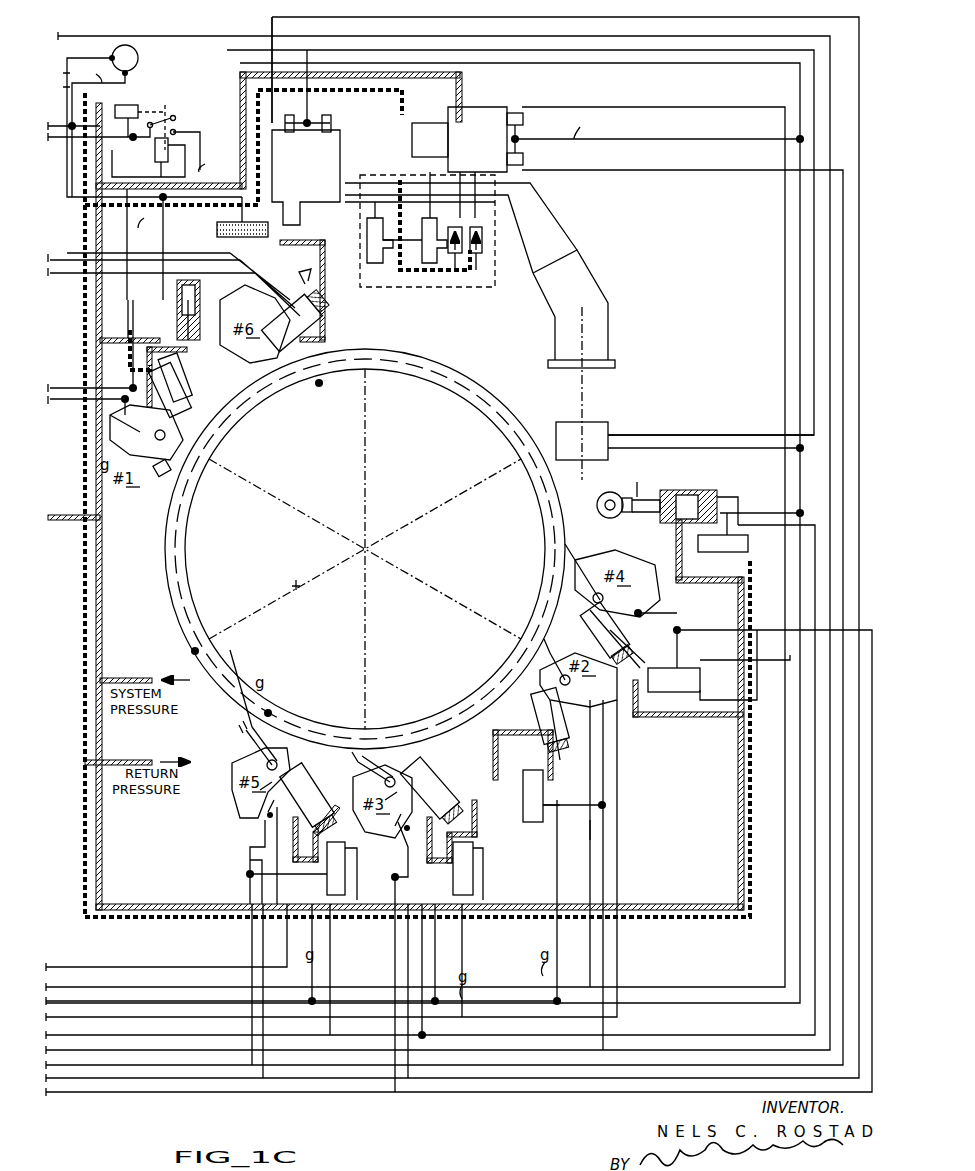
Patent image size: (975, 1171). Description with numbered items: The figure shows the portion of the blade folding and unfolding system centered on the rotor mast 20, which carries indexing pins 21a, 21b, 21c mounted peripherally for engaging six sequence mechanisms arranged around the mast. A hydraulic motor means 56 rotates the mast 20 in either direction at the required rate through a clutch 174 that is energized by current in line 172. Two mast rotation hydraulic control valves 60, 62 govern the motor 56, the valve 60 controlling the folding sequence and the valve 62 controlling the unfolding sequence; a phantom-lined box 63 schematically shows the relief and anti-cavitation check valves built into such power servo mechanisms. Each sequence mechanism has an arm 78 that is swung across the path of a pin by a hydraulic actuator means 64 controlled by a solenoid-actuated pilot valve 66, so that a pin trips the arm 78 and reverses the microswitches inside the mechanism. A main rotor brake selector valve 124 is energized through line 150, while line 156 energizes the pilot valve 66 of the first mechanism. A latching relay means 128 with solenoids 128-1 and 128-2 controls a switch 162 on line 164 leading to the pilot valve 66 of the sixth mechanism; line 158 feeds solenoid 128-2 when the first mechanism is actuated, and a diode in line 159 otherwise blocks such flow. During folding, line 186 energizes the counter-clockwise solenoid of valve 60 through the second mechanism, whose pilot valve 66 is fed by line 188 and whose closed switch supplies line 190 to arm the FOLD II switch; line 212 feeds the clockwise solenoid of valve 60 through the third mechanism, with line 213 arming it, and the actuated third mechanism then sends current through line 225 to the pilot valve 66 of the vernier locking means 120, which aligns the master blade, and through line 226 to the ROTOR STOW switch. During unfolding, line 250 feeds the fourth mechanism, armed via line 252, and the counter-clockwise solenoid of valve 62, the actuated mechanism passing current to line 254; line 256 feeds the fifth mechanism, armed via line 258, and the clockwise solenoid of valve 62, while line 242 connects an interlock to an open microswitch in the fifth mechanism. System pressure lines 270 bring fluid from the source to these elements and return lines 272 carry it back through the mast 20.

The rotor mast 20 is at (408, 477).
The indexing pin 21a is at (190, 650).
The indexing pin 21b is at (271, 710).
The indexing pin 21c is at (319, 384).
The hydraulic motor means 56 is at (592, 285).
The rotor mast fold hydraulic control valve 60 is at (328, 188).
The mast rotation hydraulic control valve 62 is at (446, 148).
The phantom-lined box 63 is at (451, 296).
The hydraulic actuator means 64 is at (326, 320).
The solenoid-actuated pilot valve 66 is at (278, 250).
The arm 78 is at (166, 476).
The vernier locking means 120 is at (680, 473).
The main rotor brake selector valve 124 is at (135, 60).
The latching relay means 128 is at (170, 99).
The solenoid 128-1 is at (150, 98).
The solenoid 128-2 is at (158, 150).
The line 150 is at (83, 38).
The line 156 is at (168, 308).
The line 158 is at (128, 313).
The line 159 is at (64, 390).
The switch 162 is at (175, 122).
The line 164 is at (188, 210).
The line 172 is at (172, 36).
The clutch 174 is at (606, 420).
The line 186 is at (343, 48).
The line 188 is at (582, 805).
The line 190 is at (589, 858).
The line 212 is at (272, 18).
The line 213 is at (393, 876).
The line 225 is at (850, 516).
The line 226 is at (334, 997).
The line 242 is at (230, 966).
The line 250 is at (658, 106).
The line 252 is at (690, 628).
The line 254 is at (660, 984).
The line 256 is at (616, 176).
The line 258 is at (234, 872).
The system pressure lines 270 is at (458, 98).
The return lines 272 is at (403, 97).